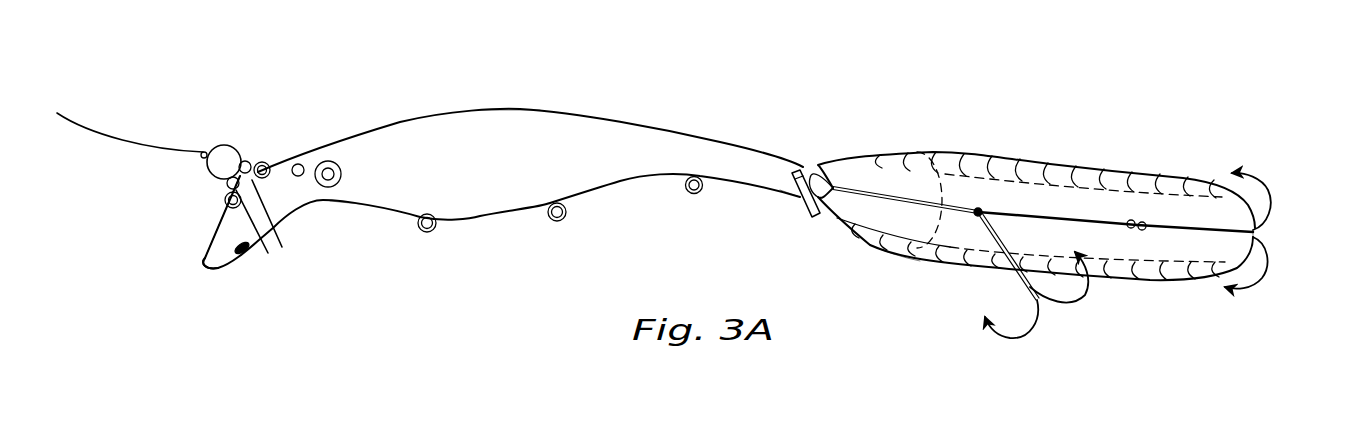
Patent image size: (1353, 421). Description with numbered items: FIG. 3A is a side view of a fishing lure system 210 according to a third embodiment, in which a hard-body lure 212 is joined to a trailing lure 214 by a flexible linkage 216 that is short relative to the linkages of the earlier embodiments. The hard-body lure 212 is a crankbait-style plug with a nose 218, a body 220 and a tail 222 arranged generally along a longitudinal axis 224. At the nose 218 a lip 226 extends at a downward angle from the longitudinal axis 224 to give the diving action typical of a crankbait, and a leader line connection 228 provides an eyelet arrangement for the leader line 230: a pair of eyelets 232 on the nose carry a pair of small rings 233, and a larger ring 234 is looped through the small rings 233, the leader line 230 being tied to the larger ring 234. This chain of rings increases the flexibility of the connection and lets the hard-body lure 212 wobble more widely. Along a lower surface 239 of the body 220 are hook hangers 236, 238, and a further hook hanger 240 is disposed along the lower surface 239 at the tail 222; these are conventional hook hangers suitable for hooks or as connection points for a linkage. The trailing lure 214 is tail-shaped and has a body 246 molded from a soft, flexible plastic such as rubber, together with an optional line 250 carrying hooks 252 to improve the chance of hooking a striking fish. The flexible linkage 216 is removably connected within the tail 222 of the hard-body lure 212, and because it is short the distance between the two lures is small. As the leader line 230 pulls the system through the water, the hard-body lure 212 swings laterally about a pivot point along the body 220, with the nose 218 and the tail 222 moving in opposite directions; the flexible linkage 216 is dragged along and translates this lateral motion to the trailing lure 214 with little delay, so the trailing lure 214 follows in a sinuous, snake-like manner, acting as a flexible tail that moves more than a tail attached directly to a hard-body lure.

The fishing lure system 210 is at (849, 74).
The hard-body lure 212 is at (641, 109).
The trailing lure 214 is at (1093, 158).
The flexible linkage 216 is at (803, 236).
The nose 218 is at (239, 301).
The body 220 is at (513, 104).
The tail 222 is at (797, 149).
The longitudinal axis 224 is at (165, 137).
The lip 226 is at (204, 265).
The leader line connection 228 is at (201, 222).
The leader line 230 is at (135, 142).
The pair of eyelets 232 is at (273, 233).
The pair of small rings 233 is at (250, 158).
The larger ring 234 is at (205, 163).
The hook hanger 236 is at (427, 233).
The hook hanger 238 is at (548, 222).
The lower surface 239 is at (366, 222).
The hook hanger 240 is at (697, 195).
The body 246 is at (893, 220).
The line 250 is at (1017, 217).
The hooks 252 is at (1065, 307).